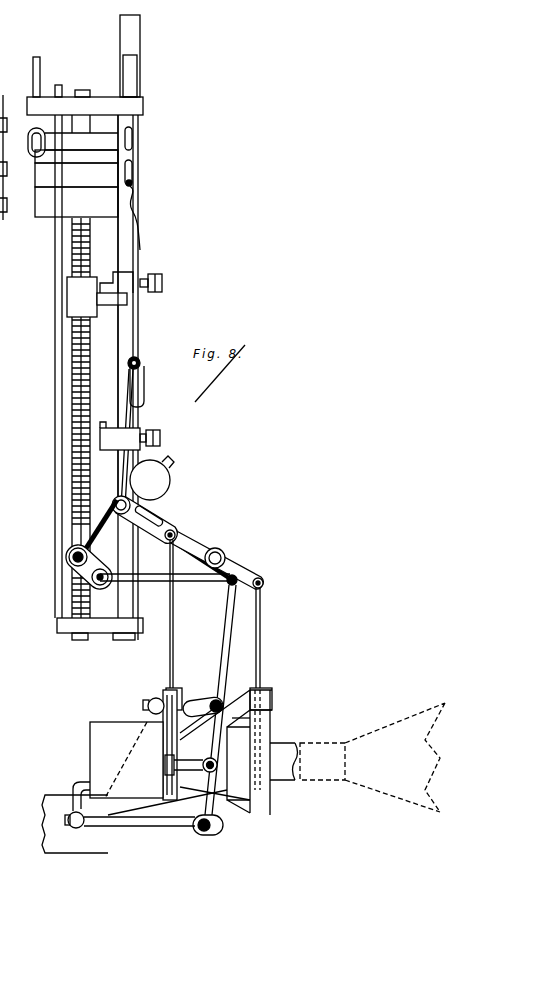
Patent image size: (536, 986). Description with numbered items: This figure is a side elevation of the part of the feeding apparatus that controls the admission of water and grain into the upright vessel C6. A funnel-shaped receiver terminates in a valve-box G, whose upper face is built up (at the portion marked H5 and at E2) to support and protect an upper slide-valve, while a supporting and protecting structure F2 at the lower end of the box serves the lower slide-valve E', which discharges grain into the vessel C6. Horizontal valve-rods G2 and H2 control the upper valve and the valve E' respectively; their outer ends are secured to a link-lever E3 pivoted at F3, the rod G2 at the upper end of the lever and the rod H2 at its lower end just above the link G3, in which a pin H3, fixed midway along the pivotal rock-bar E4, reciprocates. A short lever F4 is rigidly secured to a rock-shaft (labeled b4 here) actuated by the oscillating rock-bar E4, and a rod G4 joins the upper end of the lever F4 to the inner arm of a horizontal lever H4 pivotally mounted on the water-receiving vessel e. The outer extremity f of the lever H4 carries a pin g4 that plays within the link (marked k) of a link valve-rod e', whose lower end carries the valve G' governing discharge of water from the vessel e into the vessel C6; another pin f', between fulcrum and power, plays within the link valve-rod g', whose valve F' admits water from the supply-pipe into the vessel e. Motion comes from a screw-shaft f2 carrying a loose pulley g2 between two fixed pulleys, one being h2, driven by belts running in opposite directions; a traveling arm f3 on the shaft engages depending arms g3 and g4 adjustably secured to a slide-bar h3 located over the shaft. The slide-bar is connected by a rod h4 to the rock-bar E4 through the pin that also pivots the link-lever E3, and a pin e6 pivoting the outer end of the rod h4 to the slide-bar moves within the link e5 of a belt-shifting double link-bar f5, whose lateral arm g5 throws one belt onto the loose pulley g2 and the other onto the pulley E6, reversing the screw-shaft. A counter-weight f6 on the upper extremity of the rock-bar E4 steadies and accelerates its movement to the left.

The lateral arm g5 is at (73, 142).
The fixed pulley h2 is at (76, 156).
The loose pulley g2 is at (76, 175).
The forward pulley E6 is at (76, 202).
The double link-bar f5 is at (141, 250).
The depending arm g4 is at (150, 292).
The traveling arm f3 is at (100, 294).
The slide-bar h3 is at (122, 307).
The screw-shaft f2 is at (90, 366).
The pin e6 is at (140, 364).
The link e5 is at (144, 392).
The depending arm g3 is at (141, 431).
The rod h4 is at (122, 458).
The counter-weight f6 is at (152, 478).
The pin H3 is at (121, 505).
The link G3 is at (148, 520).
The rock-bar E4 is at (101, 525).
The short lever F4 is at (90, 567).
The pivot F3 is at (222, 552).
The link-lever E3 is at (201, 554).
The shaft b4 is at (74, 558).
The rod G4 is at (168, 588).
The valve-rod H2 is at (178, 625).
The valve-rod G2 is at (266, 644).
The horizontal lever H4 is at (225, 700).
The link valve-rod g' is at (203, 697).
The water-inlet valve F' is at (142, 706).
The water-receiving vessel e is at (126, 760).
The slide-valve E' is at (166, 770).
The supporting and protecting structure F2 is at (179, 752).
The valve-box G is at (198, 770).
The outer extremity f is at (215, 771).
The pin f' is at (241, 712).
The lever H5 is at (277, 717).
The built-up upper face E2 is at (336, 752).
The discharge valve G' is at (130, 814).
The link valve-rod e' is at (128, 831).
The upright vessel C6 is at (58, 852).
The pivot k is at (230, 828).